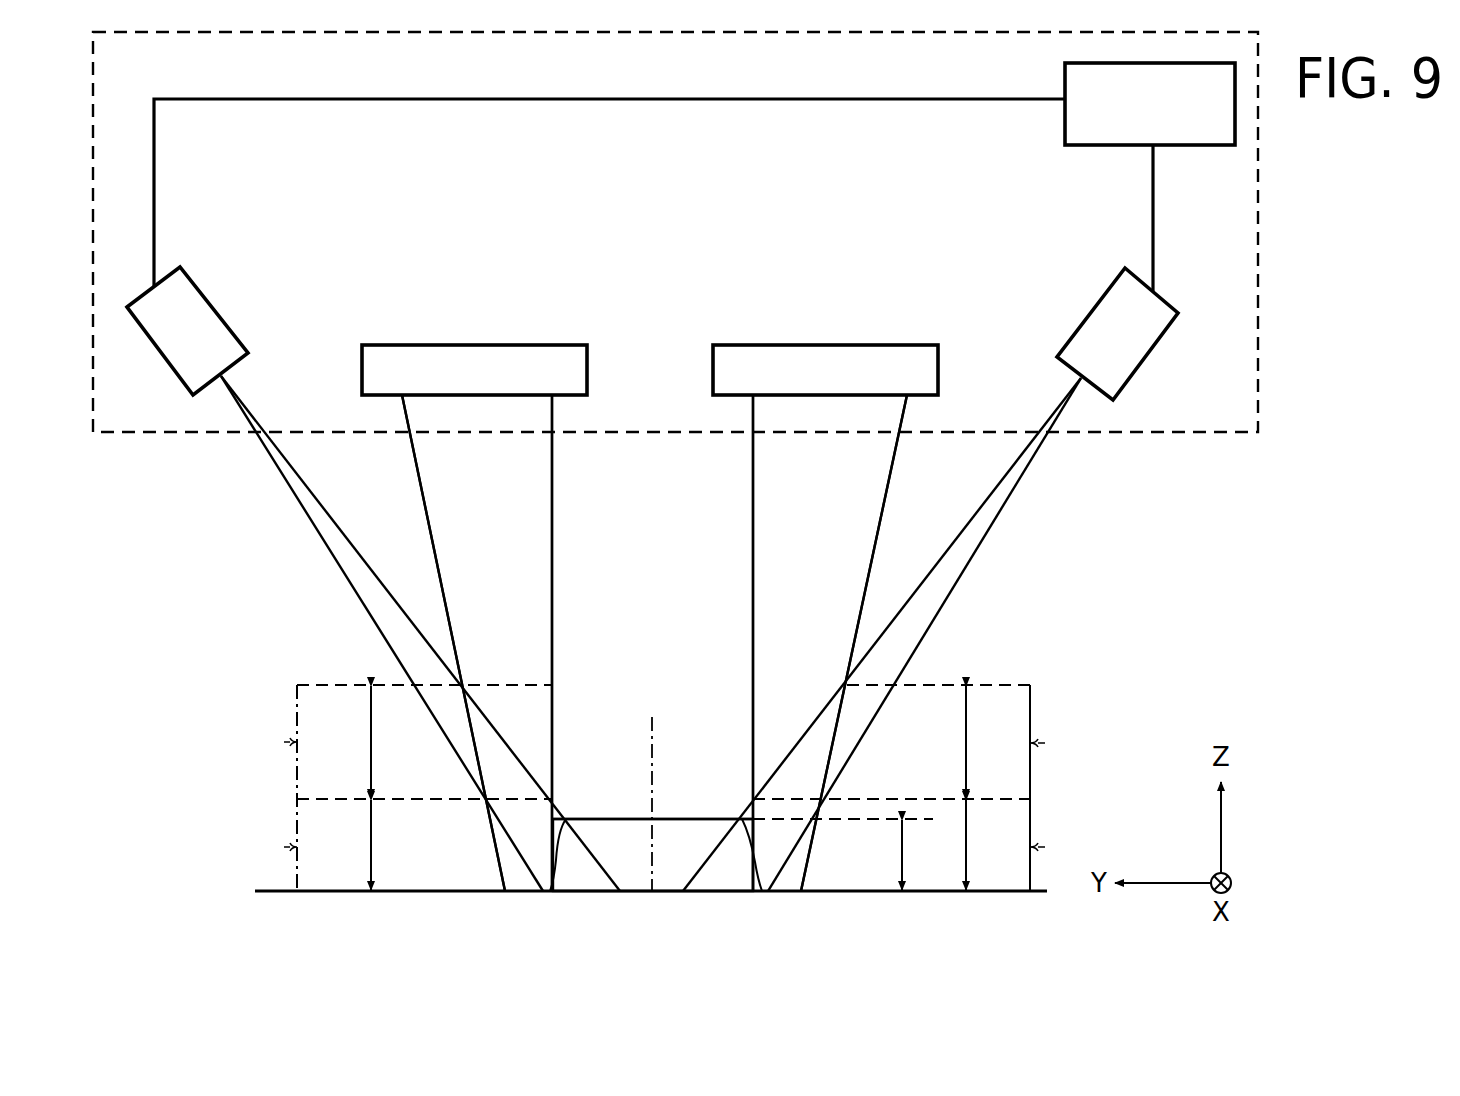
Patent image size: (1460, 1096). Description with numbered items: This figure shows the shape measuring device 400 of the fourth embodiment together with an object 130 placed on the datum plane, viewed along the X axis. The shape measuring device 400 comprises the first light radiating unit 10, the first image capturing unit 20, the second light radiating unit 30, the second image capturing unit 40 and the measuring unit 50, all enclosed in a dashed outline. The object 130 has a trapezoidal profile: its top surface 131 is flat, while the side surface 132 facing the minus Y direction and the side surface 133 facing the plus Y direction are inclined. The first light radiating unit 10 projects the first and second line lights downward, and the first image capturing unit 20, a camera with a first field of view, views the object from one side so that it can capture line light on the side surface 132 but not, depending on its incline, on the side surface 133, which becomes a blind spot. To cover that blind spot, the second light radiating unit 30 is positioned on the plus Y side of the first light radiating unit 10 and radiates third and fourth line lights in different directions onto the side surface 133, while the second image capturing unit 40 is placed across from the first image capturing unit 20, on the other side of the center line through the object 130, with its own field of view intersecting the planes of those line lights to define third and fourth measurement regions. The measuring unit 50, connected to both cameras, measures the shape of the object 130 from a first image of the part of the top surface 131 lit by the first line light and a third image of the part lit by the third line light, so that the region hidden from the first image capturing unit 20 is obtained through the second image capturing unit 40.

The first light radiating unit 10 is at (938, 372).
The first image capturing unit 20 is at (1088, 313).
The second light radiating unit 30 is at (587, 372).
The second image capturing unit 40 is at (220, 314).
The measuring unit 50 is at (1068, 146).
The object 130 is at (712, 815).
The top surface 131 is at (633, 818).
The side surface facing in the −Y-axis direction 132 is at (760, 869).
The side surface facing in the +Y-axis direction 133 is at (550, 866).
The shape measuring device 400 is at (1113, 433).